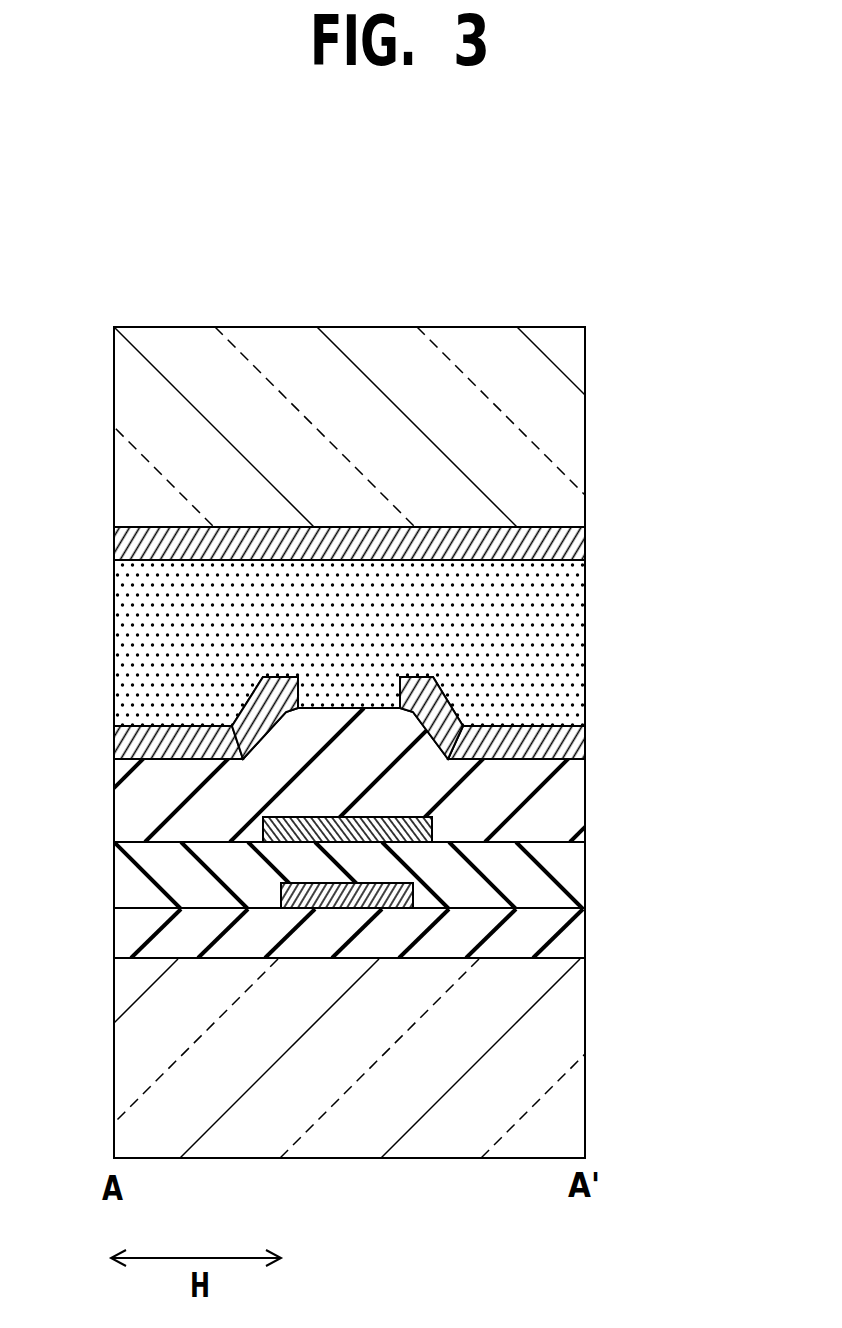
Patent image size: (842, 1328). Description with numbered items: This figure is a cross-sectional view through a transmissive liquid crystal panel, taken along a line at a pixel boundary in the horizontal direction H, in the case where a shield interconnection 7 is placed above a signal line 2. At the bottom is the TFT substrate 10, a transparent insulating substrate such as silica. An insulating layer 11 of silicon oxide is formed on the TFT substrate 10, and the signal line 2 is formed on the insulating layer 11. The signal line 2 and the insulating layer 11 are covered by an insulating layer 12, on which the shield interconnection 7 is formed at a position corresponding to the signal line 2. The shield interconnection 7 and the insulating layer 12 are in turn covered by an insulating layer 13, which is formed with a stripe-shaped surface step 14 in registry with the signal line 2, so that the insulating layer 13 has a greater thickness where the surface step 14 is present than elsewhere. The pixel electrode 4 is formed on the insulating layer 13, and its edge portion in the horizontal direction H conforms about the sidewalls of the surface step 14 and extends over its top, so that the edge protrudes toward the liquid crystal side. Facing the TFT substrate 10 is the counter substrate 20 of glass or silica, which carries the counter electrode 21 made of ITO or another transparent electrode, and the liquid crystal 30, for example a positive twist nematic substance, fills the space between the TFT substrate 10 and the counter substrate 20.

The signal line 2 is at (413, 897).
The pixel electrode 4 is at (127, 742).
The shield interconnection 7 is at (432, 820).
The TFT substrate 10 is at (570, 1048).
The insulating layer 11 is at (130, 936).
The insulating layer 12 is at (130, 886).
The insulating layer 13 is at (130, 803).
The surface step 14 is at (425, 722).
The counter substrate 20 is at (572, 424).
The counter electrode 21 is at (586, 542).
The liquid crystal 30 is at (128, 641).